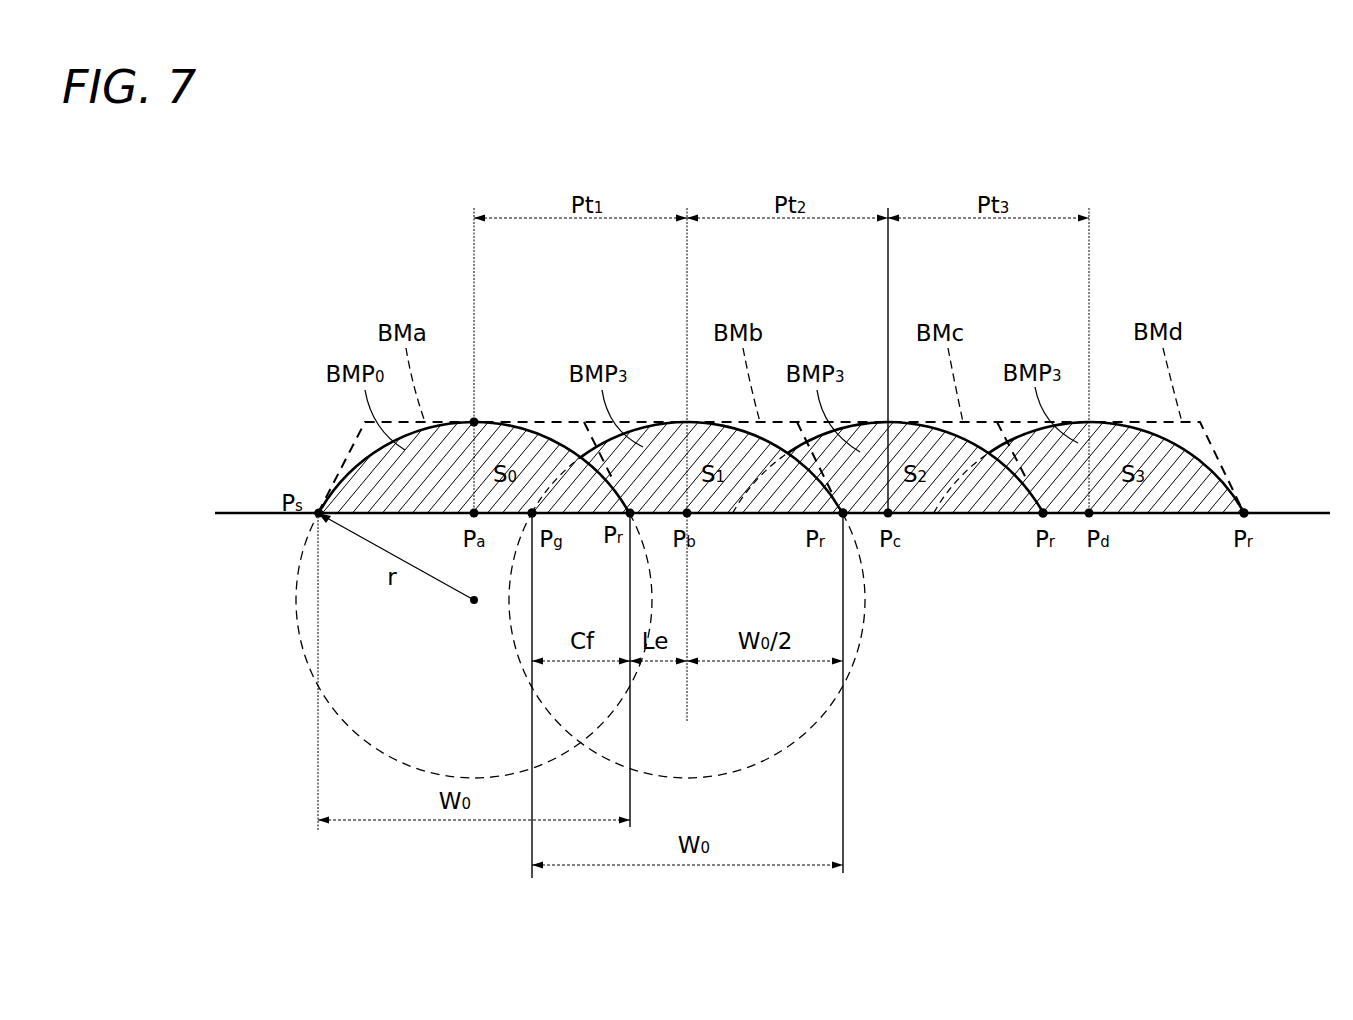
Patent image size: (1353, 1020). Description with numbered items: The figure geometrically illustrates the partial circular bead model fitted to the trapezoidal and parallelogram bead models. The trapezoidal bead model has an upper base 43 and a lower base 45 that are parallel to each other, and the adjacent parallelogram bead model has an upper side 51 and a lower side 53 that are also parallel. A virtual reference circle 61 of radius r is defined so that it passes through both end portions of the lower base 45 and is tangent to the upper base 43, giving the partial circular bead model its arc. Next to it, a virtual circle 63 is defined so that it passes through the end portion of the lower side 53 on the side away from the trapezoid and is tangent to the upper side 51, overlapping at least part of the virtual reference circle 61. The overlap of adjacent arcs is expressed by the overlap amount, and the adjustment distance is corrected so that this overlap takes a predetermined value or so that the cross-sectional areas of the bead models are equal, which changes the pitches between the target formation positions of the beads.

The upper base 43 is at (540, 422).
The lower base 45 is at (573, 522).
The upper side 51 is at (633, 423).
The lower side 53 is at (780, 522).
The virtual reference circle 61 is at (295, 604).
The virtual circle 63 is at (866, 594).